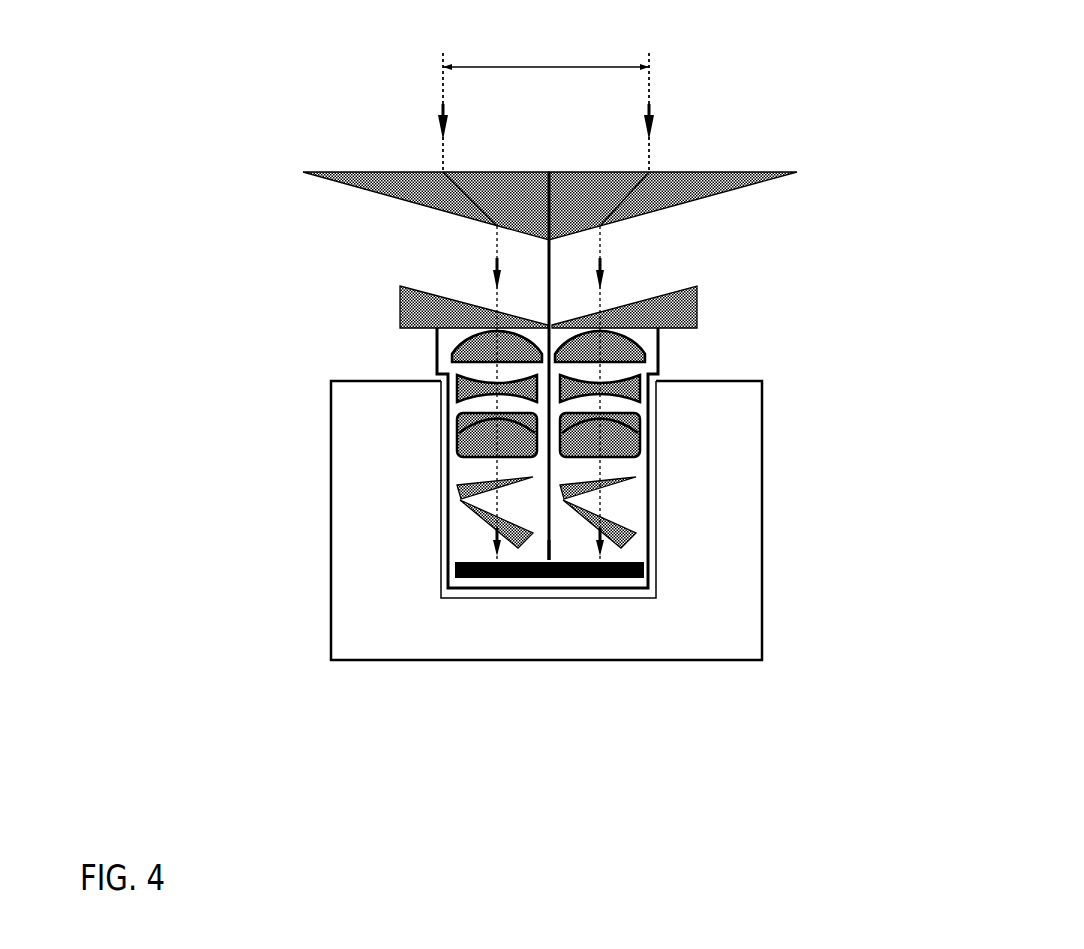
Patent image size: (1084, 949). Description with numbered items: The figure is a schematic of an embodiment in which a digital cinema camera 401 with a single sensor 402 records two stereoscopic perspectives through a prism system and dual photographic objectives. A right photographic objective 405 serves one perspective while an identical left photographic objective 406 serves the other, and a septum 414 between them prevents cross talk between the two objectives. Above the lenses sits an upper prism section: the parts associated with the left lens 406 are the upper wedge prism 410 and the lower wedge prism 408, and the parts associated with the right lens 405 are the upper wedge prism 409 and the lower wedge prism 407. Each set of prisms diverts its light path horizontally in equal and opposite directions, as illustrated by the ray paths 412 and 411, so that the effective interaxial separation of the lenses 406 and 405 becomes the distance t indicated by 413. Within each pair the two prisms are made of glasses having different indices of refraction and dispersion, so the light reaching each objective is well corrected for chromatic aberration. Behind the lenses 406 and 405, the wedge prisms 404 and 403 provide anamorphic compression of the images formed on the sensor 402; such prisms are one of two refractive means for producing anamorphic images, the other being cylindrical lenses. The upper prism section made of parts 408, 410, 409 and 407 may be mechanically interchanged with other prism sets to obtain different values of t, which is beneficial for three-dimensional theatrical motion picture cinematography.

The digital cinema camera 401 is at (483, 677).
The sensor 402 is at (590, 575).
The anamorphic wedge prism 403 is at (625, 503).
The anamorphic wedge prism 404 is at (470, 525).
The photographic objective 405 is at (640, 404).
The photographic objective 406 is at (460, 405).
The wedge prism 407 is at (710, 308).
The wedge prism 408 is at (382, 308).
The upper wedge prism 409 is at (713, 205).
The upper wedge prism 410 is at (355, 196).
The ray path 411 is at (667, 107).
The ray path 412 is at (425, 110).
The interaxial separation distance t 413 is at (562, 44).
The septum 414 is at (560, 535).